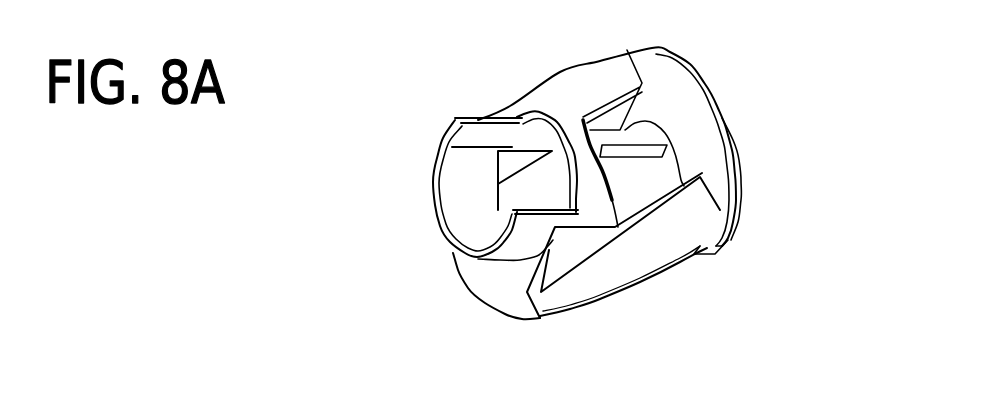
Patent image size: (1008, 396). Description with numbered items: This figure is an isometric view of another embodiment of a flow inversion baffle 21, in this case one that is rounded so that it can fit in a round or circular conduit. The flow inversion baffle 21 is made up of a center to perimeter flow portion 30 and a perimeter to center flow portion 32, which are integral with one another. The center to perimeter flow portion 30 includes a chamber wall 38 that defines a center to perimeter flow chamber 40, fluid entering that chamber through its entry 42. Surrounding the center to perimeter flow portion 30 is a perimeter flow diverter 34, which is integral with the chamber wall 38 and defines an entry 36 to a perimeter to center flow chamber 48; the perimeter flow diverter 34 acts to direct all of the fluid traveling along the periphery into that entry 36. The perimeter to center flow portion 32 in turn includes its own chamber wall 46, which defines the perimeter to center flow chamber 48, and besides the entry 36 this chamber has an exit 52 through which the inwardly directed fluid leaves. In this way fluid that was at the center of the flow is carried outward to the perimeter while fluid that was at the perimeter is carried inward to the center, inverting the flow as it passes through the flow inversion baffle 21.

The flow inversion baffle 21 is at (450, 288).
The center to perimeter flow portion 30 is at (415, 144).
The perimeter to center flow portion 32 is at (725, 85).
The perimeter flow diverter 34 is at (637, 258).
The entry 36 is at (628, 127).
The chamber wall 38 is at (520, 247).
The center to perimeter flow chamber 40 is at (465, 202).
The entry 42 is at (482, 133).
The chamber wall 46 is at (707, 254).
The perimeter to center flow chamber 48 is at (650, 175).
The exit 52 is at (728, 237).